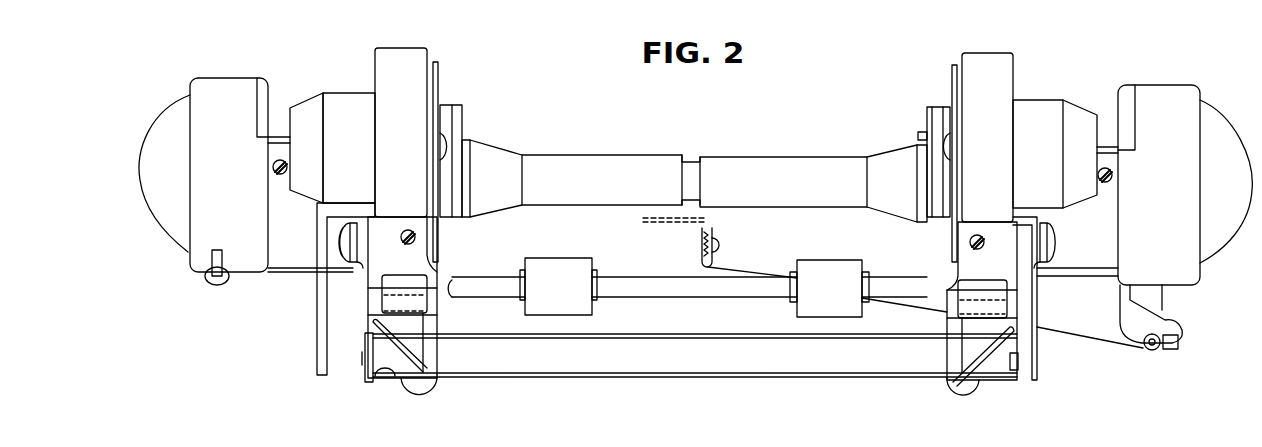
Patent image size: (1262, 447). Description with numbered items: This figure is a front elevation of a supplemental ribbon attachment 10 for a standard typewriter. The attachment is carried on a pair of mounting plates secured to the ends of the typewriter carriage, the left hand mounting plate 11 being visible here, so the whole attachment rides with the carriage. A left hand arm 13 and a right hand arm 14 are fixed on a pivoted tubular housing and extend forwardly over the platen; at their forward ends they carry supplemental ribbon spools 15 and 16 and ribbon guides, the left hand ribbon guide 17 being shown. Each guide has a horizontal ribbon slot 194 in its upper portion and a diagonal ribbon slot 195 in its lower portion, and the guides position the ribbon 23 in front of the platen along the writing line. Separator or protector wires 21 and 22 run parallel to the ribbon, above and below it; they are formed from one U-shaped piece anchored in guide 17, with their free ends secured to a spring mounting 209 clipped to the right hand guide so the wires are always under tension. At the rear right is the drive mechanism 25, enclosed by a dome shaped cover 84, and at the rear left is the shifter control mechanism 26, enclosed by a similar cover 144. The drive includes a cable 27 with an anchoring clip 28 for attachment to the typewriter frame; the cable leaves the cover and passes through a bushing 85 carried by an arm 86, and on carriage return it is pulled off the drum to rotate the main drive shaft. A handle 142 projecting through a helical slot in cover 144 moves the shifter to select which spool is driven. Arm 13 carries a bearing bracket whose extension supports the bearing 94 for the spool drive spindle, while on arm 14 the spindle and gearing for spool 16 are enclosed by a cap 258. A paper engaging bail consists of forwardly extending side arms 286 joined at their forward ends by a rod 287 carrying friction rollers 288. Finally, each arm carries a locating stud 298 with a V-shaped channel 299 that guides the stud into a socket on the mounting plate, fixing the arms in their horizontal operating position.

The shaft 10 is at (601, 153).
The left hand mounting plate 11 is at (322, 328).
The left hand arm 13 is at (402, 62).
The right hand arm 14 is at (978, 68).
The supplemental ribbon spool 15 is at (441, 68).
The supplemental ribbon spool 16 is at (950, 80).
The ribbon guide 17 is at (374, 358).
The separator wire 21 is at (613, 338).
The separator wire 22 is at (590, 377).
The ribbon 23 is at (672, 365).
The drive mechanism 25 is at (1164, 80).
The shifter control mechanism 26 is at (175, 268).
The cable 27 is at (920, 305).
The anchoring clip 28 is at (716, 237).
The cover 84 is at (1203, 100).
The bushing 85 is at (1153, 350).
The arm 86 is at (1176, 326).
The bearing 94 is at (333, 100).
The handle 142 is at (218, 280).
The cover 144 is at (170, 226).
The horizontal ribbon slot 194 is at (382, 283).
The diagonal ribbon slot 195 is at (398, 374).
The spring mounting 209 is at (1026, 376).
The cap 258 is at (1046, 113).
The side arm 286 is at (462, 122).
The rod 287 is at (626, 280).
The friction roller 288 is at (561, 262).
The locating stud 298 is at (337, 237).
The channel 299 is at (352, 265).